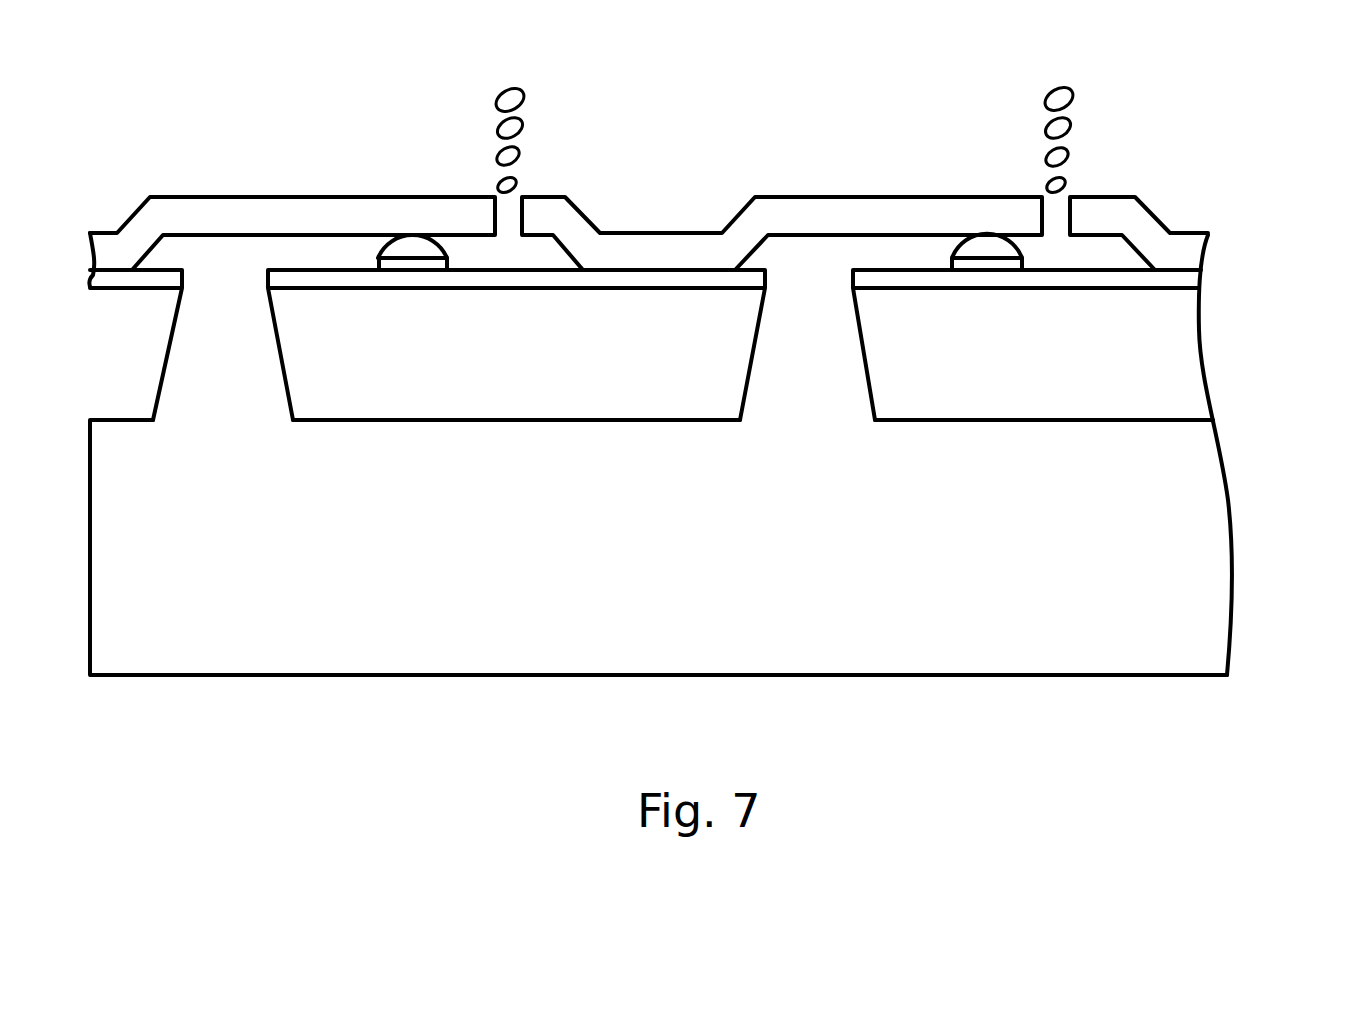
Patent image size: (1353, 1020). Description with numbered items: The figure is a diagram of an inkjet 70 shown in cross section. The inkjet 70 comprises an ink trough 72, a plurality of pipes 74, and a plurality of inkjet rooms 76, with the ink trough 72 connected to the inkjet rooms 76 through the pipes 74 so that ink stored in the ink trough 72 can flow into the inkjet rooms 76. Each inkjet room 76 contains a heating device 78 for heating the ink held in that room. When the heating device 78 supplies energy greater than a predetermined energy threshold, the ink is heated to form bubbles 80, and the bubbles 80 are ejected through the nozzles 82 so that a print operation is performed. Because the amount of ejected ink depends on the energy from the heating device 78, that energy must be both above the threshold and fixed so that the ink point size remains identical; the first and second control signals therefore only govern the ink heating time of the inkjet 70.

The inkjet 70 is at (1212, 165).
The ink trough 72 is at (652, 640).
The pipes 74 is at (188, 350).
The inkjet rooms 76 is at (313, 252).
The heating device 78 is at (405, 263).
The bubbles 80 is at (410, 243).
The nozzles 82 is at (513, 207).